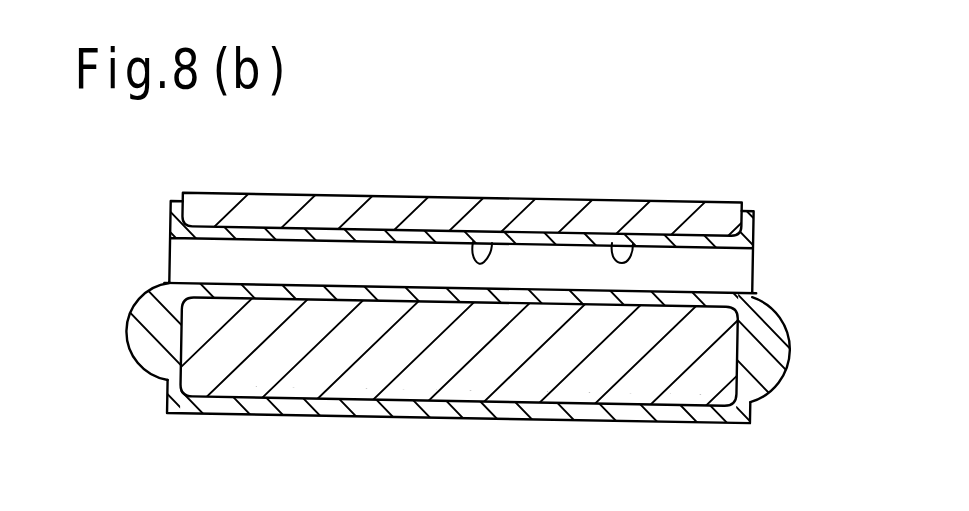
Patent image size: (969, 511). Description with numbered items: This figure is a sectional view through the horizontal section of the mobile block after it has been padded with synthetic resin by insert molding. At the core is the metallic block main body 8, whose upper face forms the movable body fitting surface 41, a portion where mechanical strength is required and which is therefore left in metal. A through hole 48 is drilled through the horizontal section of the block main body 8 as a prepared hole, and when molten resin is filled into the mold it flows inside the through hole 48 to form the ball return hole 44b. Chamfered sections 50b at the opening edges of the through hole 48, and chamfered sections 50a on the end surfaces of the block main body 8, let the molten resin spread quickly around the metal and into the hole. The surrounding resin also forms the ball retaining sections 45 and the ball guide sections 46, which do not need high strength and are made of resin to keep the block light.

The movable body fitting surface 41 is at (301, 194).
The ball return hole 44b is at (473, 242).
The through hole 48 is at (613, 241).
The chamfered section 50b is at (156, 297).
The ball guide section 46 is at (138, 329).
The chamfered section 50a is at (752, 419).
The ball retaining section 45 is at (468, 415).
The block main body 8 is at (628, 362).